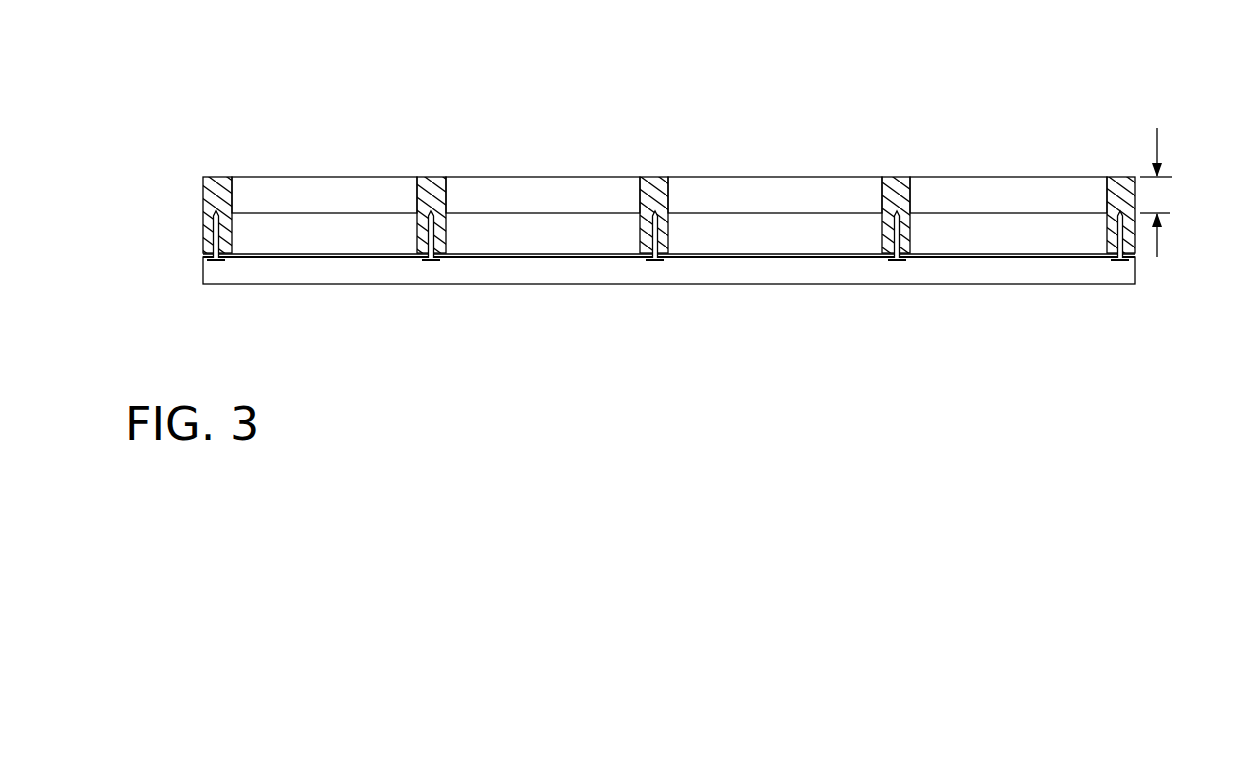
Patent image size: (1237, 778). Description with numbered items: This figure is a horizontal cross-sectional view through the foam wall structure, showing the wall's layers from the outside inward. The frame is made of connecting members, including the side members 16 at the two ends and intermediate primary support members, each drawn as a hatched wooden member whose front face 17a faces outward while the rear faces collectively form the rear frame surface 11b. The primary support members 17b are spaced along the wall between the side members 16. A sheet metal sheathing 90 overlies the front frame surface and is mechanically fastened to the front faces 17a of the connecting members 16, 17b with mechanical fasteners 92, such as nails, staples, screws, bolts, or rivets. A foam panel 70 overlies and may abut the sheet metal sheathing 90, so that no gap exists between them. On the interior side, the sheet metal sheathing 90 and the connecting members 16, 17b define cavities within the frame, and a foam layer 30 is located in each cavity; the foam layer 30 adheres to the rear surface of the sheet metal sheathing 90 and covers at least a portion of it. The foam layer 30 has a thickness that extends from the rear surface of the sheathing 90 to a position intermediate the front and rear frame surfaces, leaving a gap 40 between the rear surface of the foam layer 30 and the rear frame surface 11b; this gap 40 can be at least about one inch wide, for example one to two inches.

The rear frame surface 11b is at (236, 87).
The side member 16 is at (216, 177).
The front face of primary support member 17a is at (228, 254).
The connector housing 17b is at (430, 177).
The foam layer 30 is at (290, 213).
The gap 40 is at (1152, 198).
The foam panel 70 is at (337, 280).
The sheet metal sheathing 90 is at (205, 254).
The mechanical fastener 92 is at (217, 261).